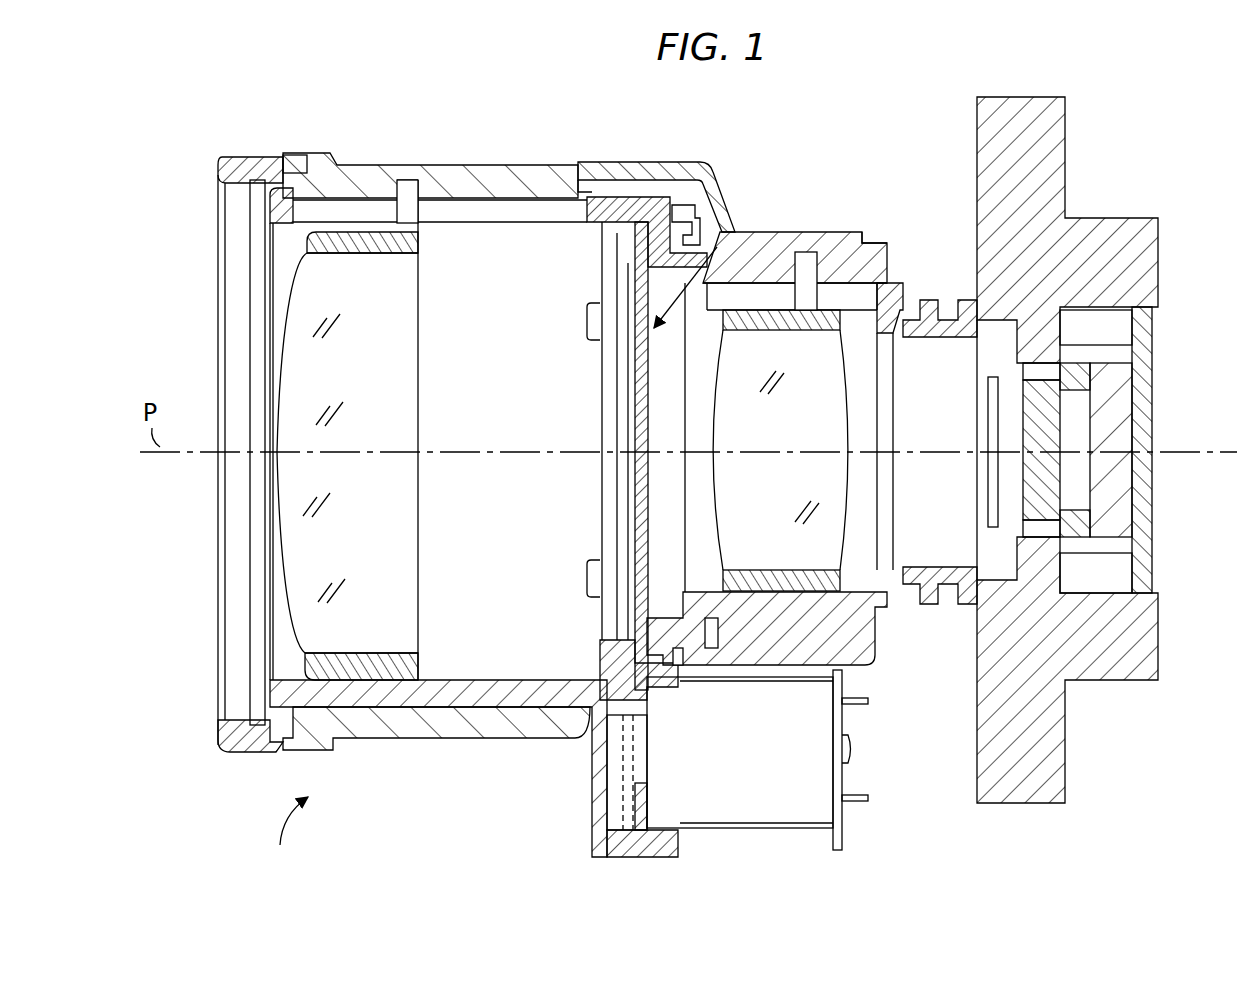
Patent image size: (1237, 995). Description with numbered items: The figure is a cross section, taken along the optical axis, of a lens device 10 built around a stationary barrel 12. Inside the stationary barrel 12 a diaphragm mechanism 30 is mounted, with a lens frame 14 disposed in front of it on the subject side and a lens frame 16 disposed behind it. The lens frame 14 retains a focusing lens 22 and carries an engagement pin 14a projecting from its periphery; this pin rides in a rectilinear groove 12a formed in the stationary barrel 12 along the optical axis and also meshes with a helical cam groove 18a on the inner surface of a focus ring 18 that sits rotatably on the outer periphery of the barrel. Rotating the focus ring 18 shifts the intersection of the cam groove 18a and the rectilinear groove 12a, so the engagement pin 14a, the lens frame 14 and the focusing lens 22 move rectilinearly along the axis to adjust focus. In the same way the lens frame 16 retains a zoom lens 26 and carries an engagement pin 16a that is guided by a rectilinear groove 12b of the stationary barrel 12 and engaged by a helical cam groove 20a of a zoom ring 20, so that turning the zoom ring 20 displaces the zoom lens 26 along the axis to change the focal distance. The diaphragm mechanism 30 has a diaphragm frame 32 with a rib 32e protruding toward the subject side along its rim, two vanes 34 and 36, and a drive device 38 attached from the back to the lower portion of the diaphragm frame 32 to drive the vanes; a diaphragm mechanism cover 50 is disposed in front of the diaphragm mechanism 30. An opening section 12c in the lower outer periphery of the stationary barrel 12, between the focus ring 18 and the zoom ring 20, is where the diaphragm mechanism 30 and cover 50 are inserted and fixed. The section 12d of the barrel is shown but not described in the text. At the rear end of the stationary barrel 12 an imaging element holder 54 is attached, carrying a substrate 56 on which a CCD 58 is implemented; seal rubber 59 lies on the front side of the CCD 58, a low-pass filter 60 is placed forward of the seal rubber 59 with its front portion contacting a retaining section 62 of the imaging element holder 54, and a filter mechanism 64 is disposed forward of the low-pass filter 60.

The lens device 10 is at (285, 837).
The stationary barrel 12 is at (606, 484).
The rectilinear groove 12a is at (533, 210).
The rectilinear groove 12b is at (760, 297).
The opening section 12c is at (590, 718).
The step portion of barrel 12d is at (597, 210).
The lens frame 14 is at (364, 396).
The engagement pin 14a is at (401, 200).
The lens frame 16 is at (806, 384).
The engagement pin 16a is at (807, 270).
The focus ring 18 is at (436, 431).
The cam groove 18a is at (417, 167).
The zoom ring 20 is at (827, 208).
The cam groove 20a is at (823, 233).
The focusing lens 22 is at (332, 275).
The zoom lens 26 is at (857, 665).
The diaphragm mechanism 30 is at (727, 233).
The diaphragm frame 32 is at (609, 455).
The rib 32e is at (657, 207).
The vane 34 is at (628, 375).
The vane 36 is at (618, 413).
The drive device 38 is at (660, 765).
The diaphragm mechanism cover 50 is at (633, 645).
The imaging element holder 54 is at (1150, 250).
The substrate 56 is at (1150, 432).
The CCD 58 is at (1120, 392).
The seal rubber 59 is at (1073, 530).
The low-pass filter 60 is at (1053, 483).
The retaining section 62 is at (1017, 378).
The filter mechanism 64 is at (985, 484).